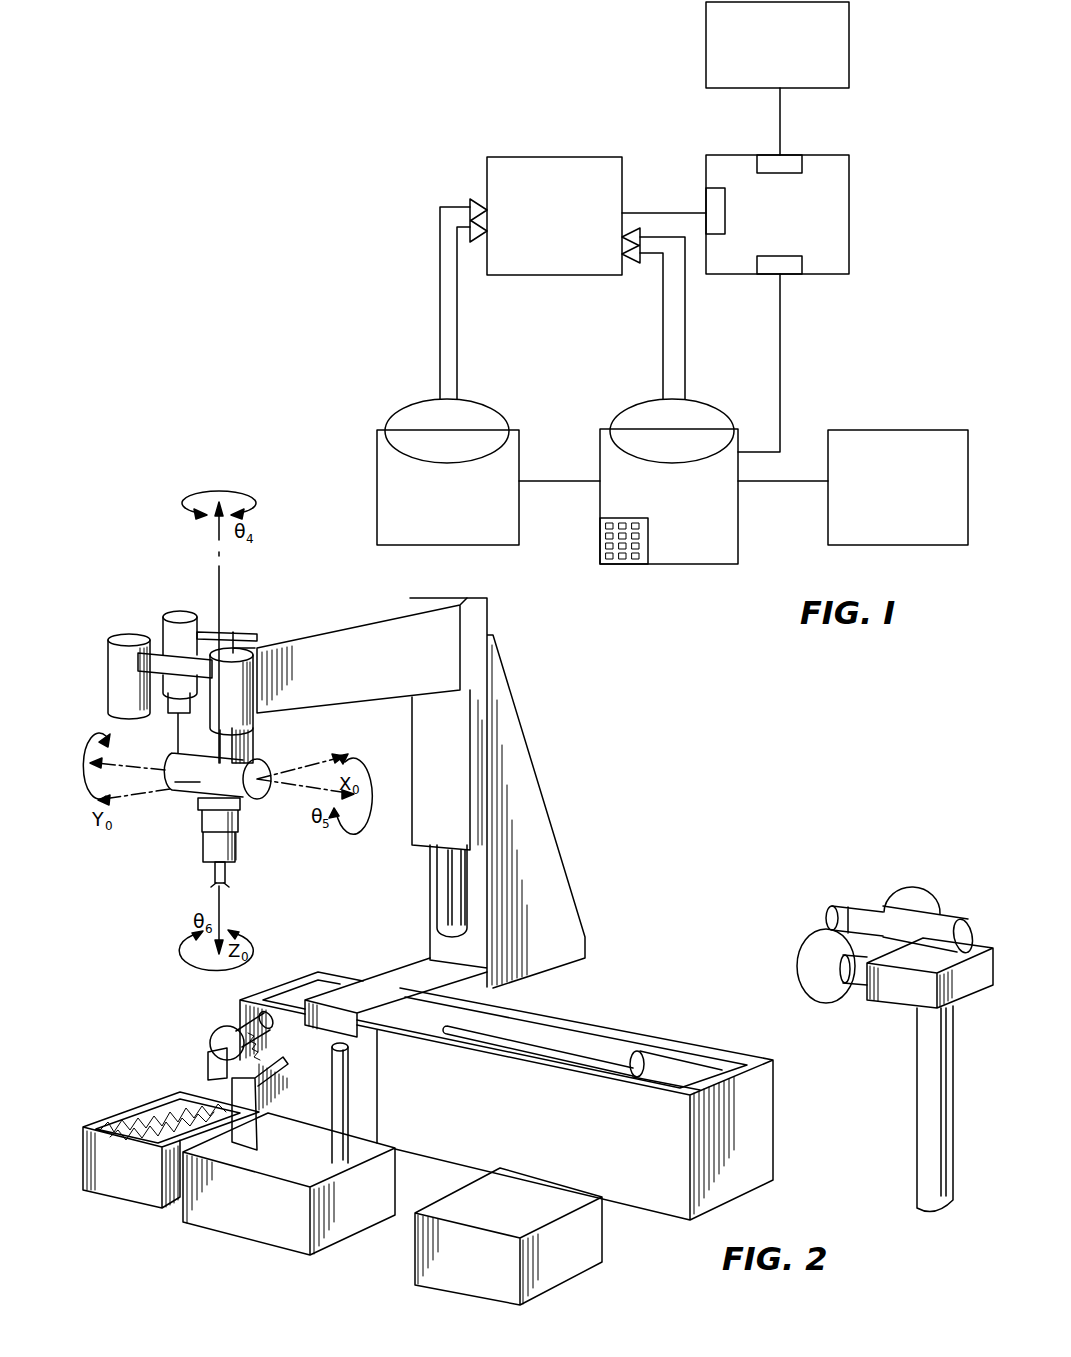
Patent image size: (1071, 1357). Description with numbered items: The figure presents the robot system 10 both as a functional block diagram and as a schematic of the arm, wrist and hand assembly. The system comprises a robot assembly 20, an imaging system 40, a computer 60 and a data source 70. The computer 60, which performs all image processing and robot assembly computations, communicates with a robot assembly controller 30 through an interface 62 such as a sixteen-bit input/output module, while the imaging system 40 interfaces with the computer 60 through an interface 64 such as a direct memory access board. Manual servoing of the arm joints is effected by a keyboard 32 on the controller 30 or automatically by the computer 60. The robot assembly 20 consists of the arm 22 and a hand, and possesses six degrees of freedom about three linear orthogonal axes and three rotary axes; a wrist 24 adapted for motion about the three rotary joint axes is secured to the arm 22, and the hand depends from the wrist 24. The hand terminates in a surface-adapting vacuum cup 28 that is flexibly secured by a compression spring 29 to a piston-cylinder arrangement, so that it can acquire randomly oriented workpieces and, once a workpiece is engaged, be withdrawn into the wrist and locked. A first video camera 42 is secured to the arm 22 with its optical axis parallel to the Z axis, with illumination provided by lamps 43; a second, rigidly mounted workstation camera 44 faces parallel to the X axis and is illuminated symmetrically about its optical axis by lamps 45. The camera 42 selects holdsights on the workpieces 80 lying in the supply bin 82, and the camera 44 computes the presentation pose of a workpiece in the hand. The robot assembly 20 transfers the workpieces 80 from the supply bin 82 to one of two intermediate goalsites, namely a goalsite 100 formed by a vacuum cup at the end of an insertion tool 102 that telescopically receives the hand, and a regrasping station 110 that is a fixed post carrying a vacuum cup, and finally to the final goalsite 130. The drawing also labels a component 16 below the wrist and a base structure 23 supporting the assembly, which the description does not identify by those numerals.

In FIG. 1, the robot system 10 is at (676, 306).
In FIG. 2, the gripper tool 16 is at (236, 843).
In FIG. 1, the robot assembly 20 is at (643, 505).
In FIG. 2, the robot assembly 20 is at (527, 716).
In FIG. 2, the arm 22 is at (406, 705).
In FIG. 2, the workpiece track 23 is at (615, 977).
In FIG. 2, the wrist 24 is at (177, 831).
In FIG. 2, the vacuum cup 28 is at (222, 886).
In FIG. 2, the compression spring 29 is at (227, 872).
In FIG. 1, the robot assembly controller 30 is at (708, 550).
In FIG. 1, the keyboard 32 is at (637, 553).
In FIG. 1, the imaging system 40 is at (486, 172).
In FIG. 2, the video camera 42 is at (172, 705).
In FIG. 2, the lamps 43 is at (243, 648).
In FIG. 2, the video camera 44 is at (865, 900).
In FIG. 2, the lamps 45 is at (808, 946).
In FIG. 1, the computer 60 is at (849, 228).
In FIG. 1, the interface 62 is at (792, 271).
In FIG. 1, the interface 64 is at (704, 200).
In FIG. 1, the data source 70 is at (847, 63).
In FIG. 2, the workpieces 80 is at (178, 1122).
In FIG. 2, the supply bin 82 is at (130, 1176).
In FIG. 2, the intermediate goalsite 100 is at (245, 1108).
In FIG. 2, the insertion tool 102 is at (240, 1004).
In FIG. 2, the regrasping station 110 is at (341, 1097).
In FIG. 2, the final goalsite 130 is at (564, 1192).